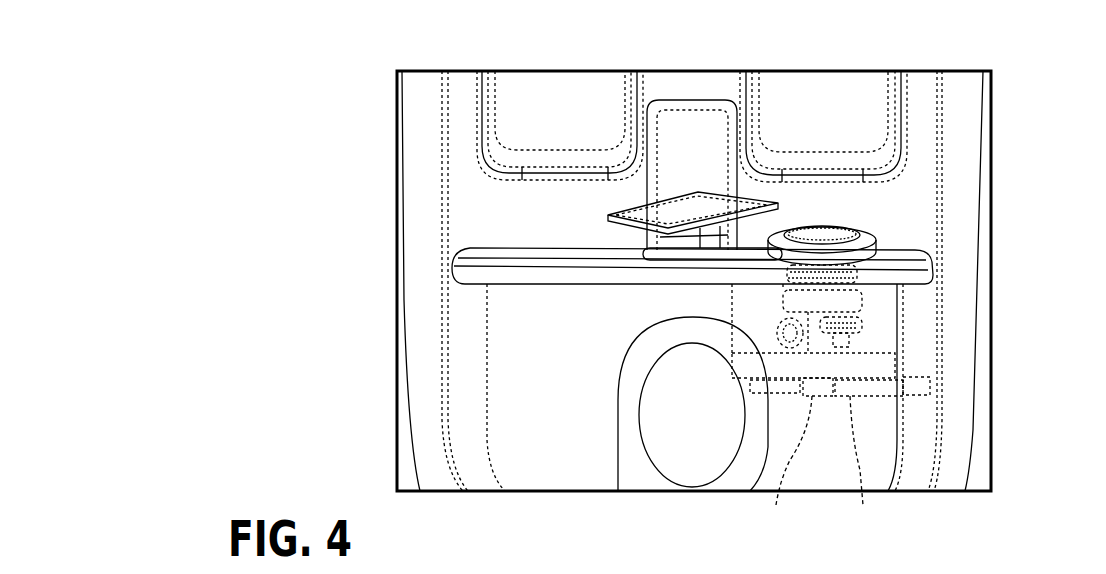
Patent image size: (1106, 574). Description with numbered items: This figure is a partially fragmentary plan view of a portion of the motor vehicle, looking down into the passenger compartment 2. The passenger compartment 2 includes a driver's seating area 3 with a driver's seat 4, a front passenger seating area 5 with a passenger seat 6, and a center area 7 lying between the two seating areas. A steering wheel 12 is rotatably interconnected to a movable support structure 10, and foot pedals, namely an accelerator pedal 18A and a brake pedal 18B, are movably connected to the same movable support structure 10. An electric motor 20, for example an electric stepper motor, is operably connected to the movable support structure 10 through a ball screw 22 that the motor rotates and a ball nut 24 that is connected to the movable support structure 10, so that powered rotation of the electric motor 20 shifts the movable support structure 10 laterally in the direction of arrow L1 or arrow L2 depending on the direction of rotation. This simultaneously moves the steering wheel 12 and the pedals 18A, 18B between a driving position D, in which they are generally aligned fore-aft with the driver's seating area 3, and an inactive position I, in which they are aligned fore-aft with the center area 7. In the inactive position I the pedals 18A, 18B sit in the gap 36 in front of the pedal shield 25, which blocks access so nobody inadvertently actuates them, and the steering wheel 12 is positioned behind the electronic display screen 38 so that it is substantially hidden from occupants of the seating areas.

The passenger compartment 2 is at (470, 217).
The driver's seating area 3 is at (805, 94).
The driver's seat 4 is at (853, 107).
The front passenger seating area 5 is at (549, 104).
The passenger seat 6 is at (593, 105).
The center area 7 is at (713, 94).
The electronic display screen 38 is at (690, 205).
The steering wheel 12 is at (875, 229).
The pedal shield 25 is at (648, 279).
The gap 36 is at (768, 303).
The accelerator pedal 18A is at (776, 326).
The brake pedal 18B is at (866, 327).
The movable support structure 10 is at (903, 360).
The electric motor 20 is at (931, 386).
The ball screw 22 is at (861, 462).
The ball nut 24 is at (801, 453).
The driving position D is at (833, 195).
The inactive position I is at (636, 226).
The lateral direction arrow L1 is at (780, 304).
The lateral direction arrow L2 is at (883, 305).